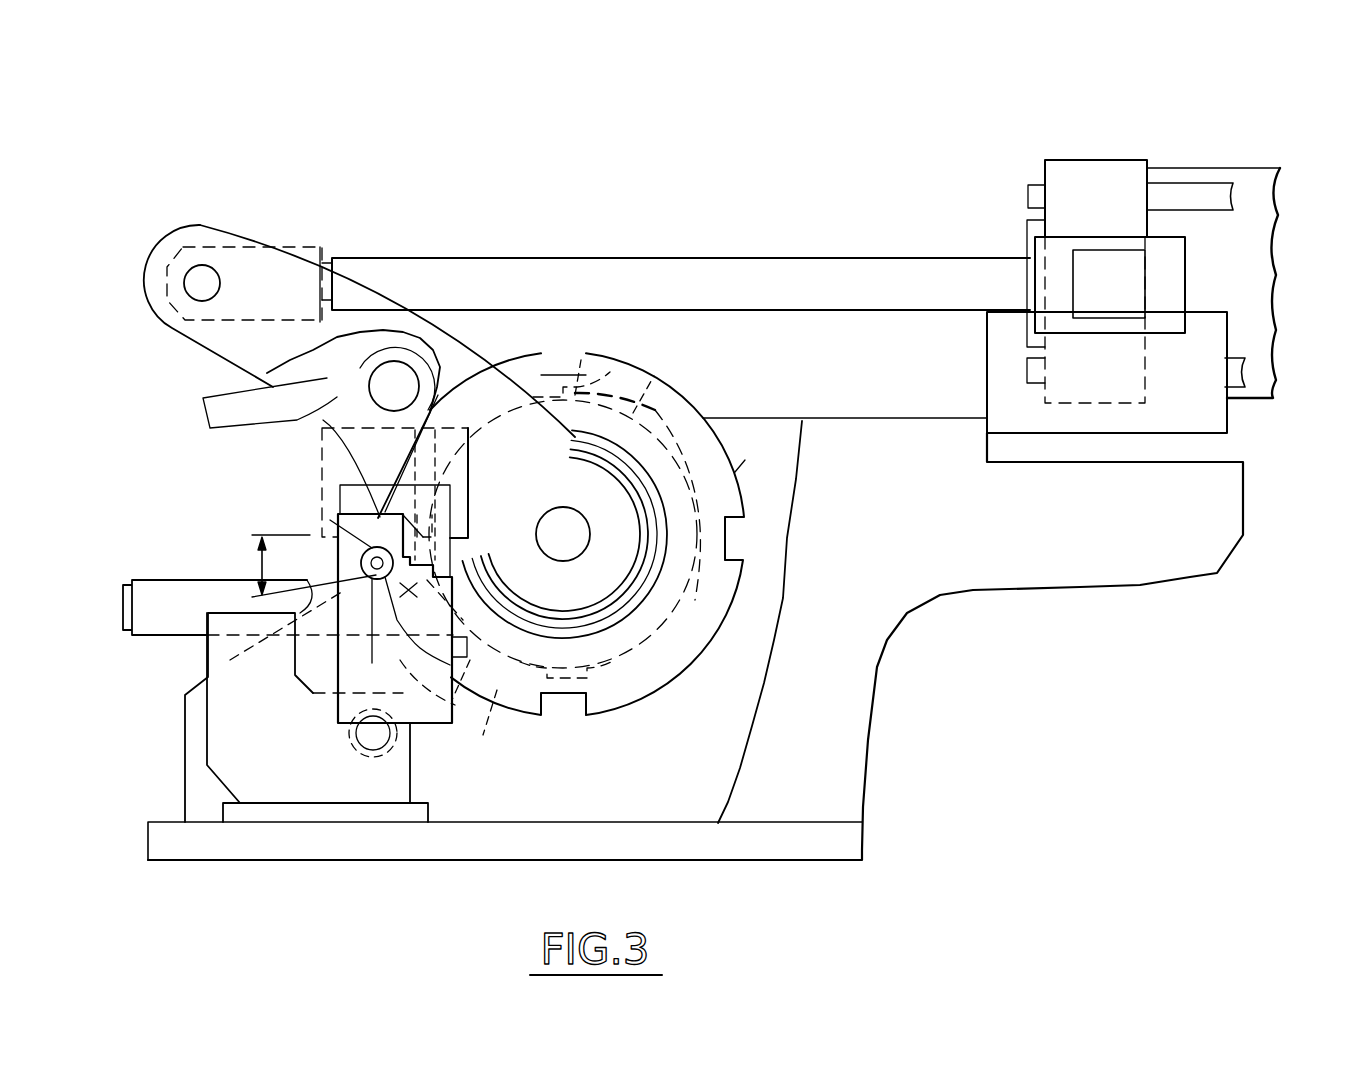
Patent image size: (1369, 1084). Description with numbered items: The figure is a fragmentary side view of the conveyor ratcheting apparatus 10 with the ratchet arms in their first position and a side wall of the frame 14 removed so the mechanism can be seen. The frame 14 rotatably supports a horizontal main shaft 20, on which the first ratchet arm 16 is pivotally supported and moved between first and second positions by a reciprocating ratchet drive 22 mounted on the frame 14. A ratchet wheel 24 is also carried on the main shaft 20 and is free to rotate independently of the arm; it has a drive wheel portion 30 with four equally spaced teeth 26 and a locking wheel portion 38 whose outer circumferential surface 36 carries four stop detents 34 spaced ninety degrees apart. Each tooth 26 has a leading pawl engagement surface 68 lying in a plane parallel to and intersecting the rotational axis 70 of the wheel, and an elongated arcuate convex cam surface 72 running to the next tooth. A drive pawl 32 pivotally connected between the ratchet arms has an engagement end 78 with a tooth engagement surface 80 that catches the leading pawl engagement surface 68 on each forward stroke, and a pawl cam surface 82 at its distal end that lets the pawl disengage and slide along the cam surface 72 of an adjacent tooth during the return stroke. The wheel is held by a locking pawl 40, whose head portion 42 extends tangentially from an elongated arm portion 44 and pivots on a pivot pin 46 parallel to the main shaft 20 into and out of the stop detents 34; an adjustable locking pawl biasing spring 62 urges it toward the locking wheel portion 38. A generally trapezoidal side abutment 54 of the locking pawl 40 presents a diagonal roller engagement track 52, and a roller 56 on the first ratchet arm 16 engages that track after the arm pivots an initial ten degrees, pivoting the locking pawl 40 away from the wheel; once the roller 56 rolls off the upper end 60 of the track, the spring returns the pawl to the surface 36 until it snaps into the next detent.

The conveyor ratcheting apparatus 10 is at (378, 150).
The frame 14 is at (948, 572).
The first ratchet arm 16 is at (222, 252).
The main shaft 20 is at (563, 512).
The reciprocating ratchet drive 22 is at (1265, 222).
The ratchet wheel 24 is at (642, 705).
The teeth 26 is at (605, 370).
The drive wheel portion 30 is at (690, 655).
The drive pawl 32 is at (236, 408).
The ratchet wheel stop detents 34 is at (548, 358).
The outer circumferential surface 36 is at (688, 390).
The locking wheel portion 38 is at (727, 477).
The locking pawl 40 is at (335, 530).
The head portion 42 is at (365, 552).
The elongated arm portion 44 is at (348, 665).
The pivot pin 46 is at (350, 742).
The roller engagement track 52 is at (335, 476).
The side abutment 54 is at (372, 566).
The roller 56 is at (305, 625).
The upper end 60 is at (400, 545).
The locking pawl biasing spring 62 is at (145, 590).
The leading pawl engagement surface 68 is at (548, 360).
The rotational axis 70 is at (578, 530).
The cam surface 72 is at (648, 385).
The engagement end 78 is at (458, 615).
The tooth engagement surface 80 is at (560, 534).
The pawl cam surface 82 is at (565, 540).